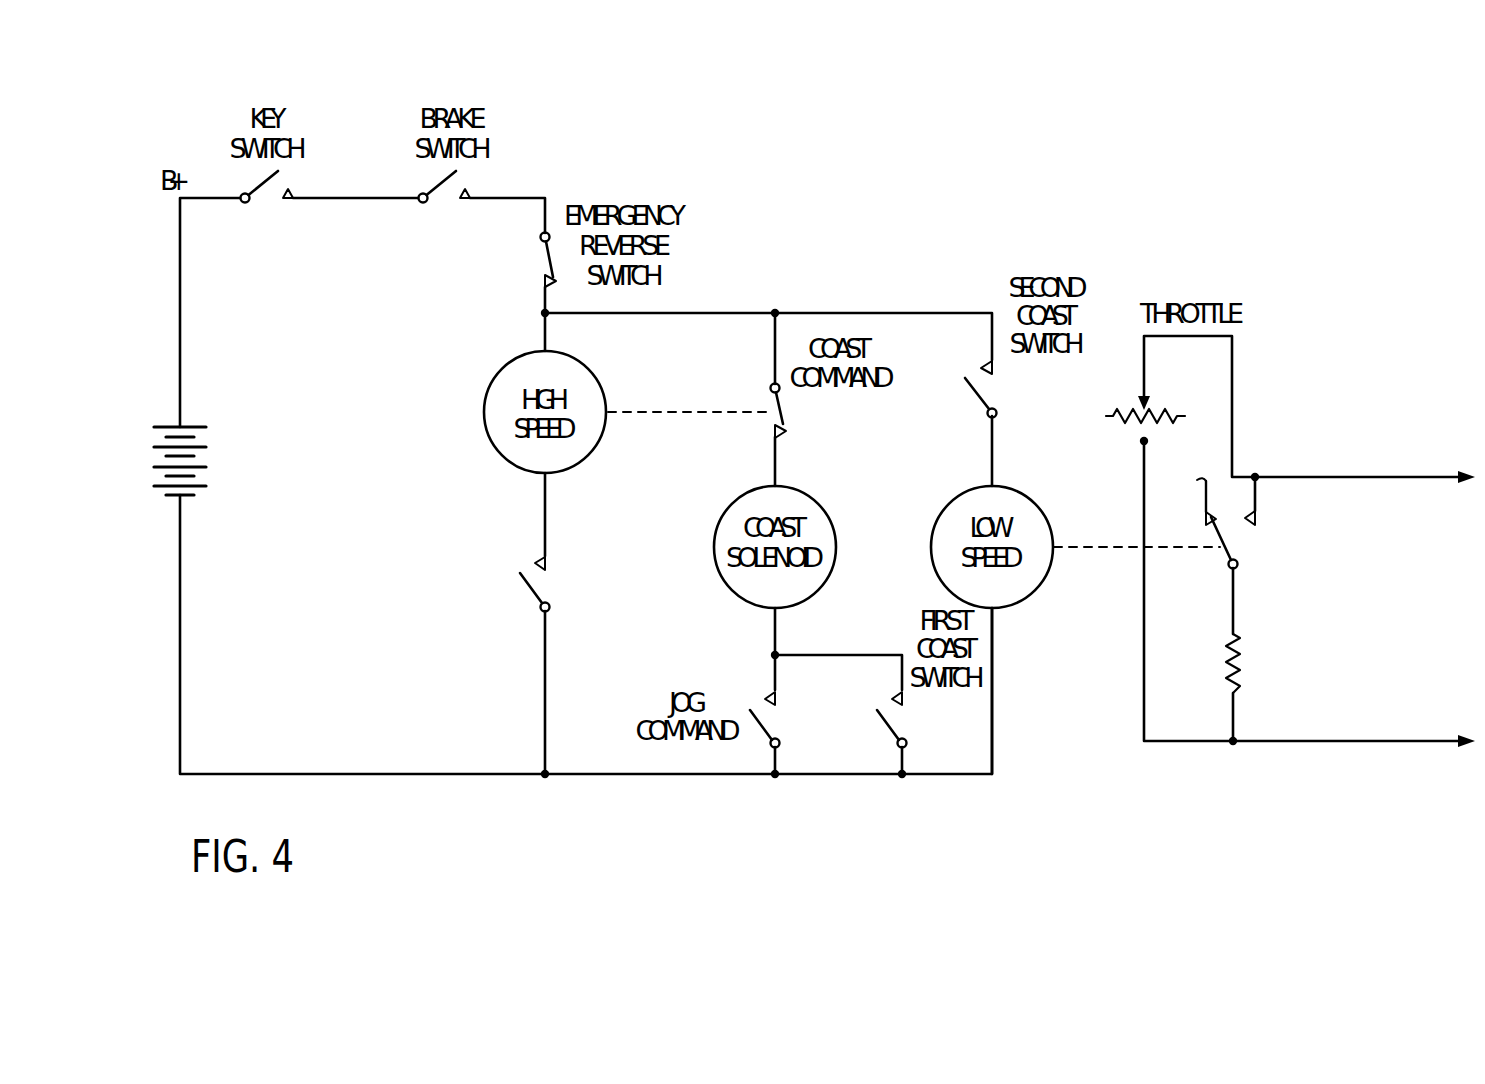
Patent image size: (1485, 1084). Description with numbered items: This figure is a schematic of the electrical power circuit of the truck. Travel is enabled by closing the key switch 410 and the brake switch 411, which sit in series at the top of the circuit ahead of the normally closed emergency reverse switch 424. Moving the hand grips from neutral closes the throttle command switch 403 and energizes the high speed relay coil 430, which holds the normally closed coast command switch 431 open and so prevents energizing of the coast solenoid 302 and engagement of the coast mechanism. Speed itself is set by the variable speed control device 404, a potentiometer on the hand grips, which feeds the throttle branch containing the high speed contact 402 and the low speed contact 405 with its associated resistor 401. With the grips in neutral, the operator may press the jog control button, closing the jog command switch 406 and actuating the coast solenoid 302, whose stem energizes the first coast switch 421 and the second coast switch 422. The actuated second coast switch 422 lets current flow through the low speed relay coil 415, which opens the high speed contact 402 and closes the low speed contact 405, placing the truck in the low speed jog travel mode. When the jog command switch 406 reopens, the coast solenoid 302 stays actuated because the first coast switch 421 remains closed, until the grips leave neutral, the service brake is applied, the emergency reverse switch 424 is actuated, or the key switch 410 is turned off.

The key switch 410 is at (273, 202).
The brake switch 411 is at (449, 202).
The emergency reverse switch 424 is at (528, 266).
The high speed relay coil 430 is at (527, 409).
The throttle command switch 403 is at (514, 623).
The coast command switch 431 is at (779, 418).
The coast solenoid 302 is at (780, 536).
The second coast switch 422 is at (992, 378).
The low speed relay coil 415 is at (1004, 544).
The jog command switch 406 is at (778, 705).
The first coast switch 421 is at (904, 705).
The variable speed control device 404 is at (1152, 396).
The high speed contact 402 is at (1194, 513).
The low speed contact 405 is at (1295, 516).
The resistor 401 is at (1256, 655).